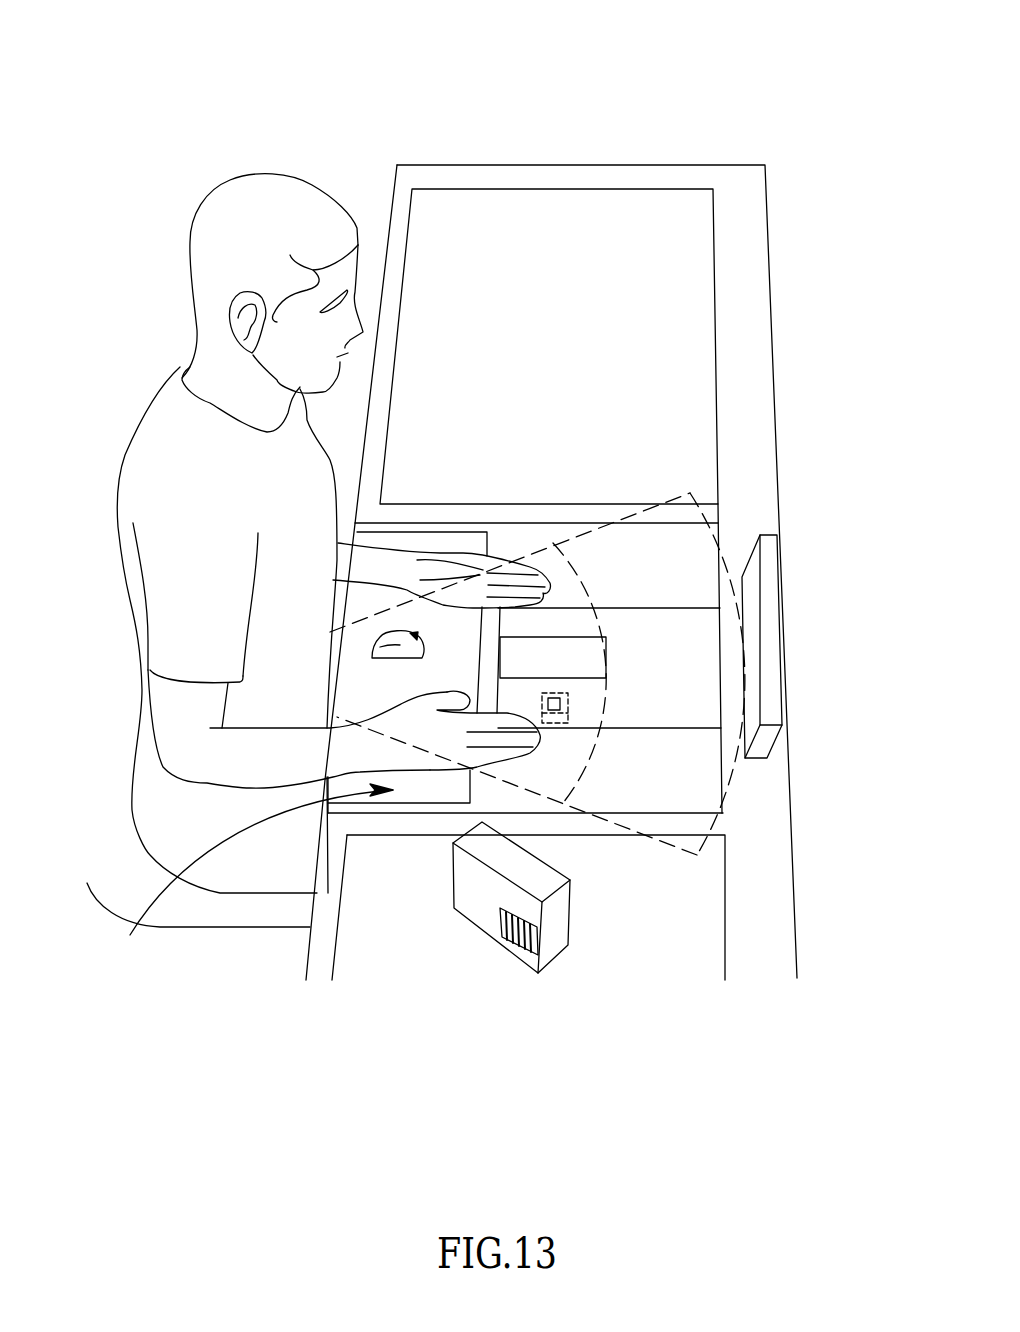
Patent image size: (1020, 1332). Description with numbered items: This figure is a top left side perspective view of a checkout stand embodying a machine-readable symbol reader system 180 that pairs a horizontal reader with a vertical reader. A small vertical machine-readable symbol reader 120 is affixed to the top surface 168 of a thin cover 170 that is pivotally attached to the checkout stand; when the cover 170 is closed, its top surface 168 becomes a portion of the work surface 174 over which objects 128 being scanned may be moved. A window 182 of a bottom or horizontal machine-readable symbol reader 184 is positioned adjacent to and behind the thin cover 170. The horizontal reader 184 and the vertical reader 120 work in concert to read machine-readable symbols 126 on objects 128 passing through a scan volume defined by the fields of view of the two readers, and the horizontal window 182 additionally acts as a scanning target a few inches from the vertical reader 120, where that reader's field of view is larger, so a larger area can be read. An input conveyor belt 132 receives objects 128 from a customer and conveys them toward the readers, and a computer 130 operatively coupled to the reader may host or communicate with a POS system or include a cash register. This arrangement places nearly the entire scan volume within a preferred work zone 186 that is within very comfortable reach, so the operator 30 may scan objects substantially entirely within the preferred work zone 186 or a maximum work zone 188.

The operator 30 is at (141, 407).
The machine-readable symbol reader 120 is at (398, 650).
The machine-readable symbols 126 is at (513, 957).
The objects 128 is at (560, 908).
The computer 130 is at (770, 617).
The input conveyor belt 132 is at (678, 920).
The top surface 168 is at (465, 543).
The thin cover 170 is at (246, 877).
The work surface 174 is at (487, 795).
The machine-readable symbol reader system 180 is at (700, 80).
The window 182 is at (568, 637).
The horizontal machine-readable symbol reader 184 is at (568, 700).
The preferred work zone 186 is at (573, 572).
The maximum work zone 188 is at (732, 770).